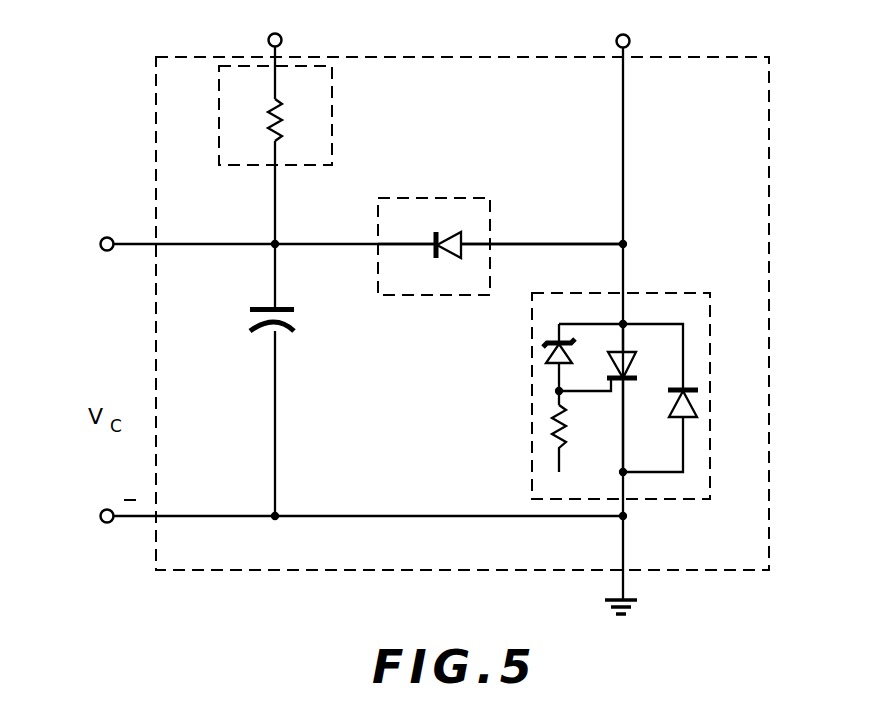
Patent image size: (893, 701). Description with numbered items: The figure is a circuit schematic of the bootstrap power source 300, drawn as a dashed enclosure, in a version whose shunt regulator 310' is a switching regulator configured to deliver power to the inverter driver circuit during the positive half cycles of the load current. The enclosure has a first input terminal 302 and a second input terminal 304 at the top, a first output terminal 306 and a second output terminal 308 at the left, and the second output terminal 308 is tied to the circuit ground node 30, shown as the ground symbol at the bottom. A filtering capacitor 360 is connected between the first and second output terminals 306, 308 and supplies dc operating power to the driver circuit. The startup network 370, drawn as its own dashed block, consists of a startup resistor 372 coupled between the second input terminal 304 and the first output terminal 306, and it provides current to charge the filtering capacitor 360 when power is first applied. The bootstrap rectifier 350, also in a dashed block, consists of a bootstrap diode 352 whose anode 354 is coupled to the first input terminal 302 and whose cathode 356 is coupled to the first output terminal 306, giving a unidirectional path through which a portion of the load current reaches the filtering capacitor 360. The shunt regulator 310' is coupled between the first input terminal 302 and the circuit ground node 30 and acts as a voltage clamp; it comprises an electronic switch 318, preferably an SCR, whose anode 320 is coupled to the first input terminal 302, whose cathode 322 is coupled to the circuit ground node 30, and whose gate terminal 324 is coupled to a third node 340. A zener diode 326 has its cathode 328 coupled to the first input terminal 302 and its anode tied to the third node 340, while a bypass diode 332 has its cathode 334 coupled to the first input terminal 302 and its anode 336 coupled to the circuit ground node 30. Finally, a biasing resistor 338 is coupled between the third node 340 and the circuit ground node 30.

The circuit ground node 30 is at (617, 577).
The bootstrap power source 300 is at (400, 57).
The first input terminal 302 is at (630, 38).
The second input terminal 304 is at (283, 36).
The first output terminal 306 is at (100, 240).
The second output terminal 308 is at (102, 510).
The shunt regulator 310' is at (638, 383).
The electronic switch 318 is at (629, 366).
The anode 320 is at (623, 343).
The cathode 322 is at (623, 413).
The gate terminal 324 is at (586, 393).
The zener diode 326 is at (552, 362).
The cathode 328 is at (616, 322).
The bypass diode 332 is at (697, 408).
The cathode 334 is at (683, 350).
The anode 336 is at (683, 458).
The biasing resistor 338 is at (563, 425).
The third node 340 is at (559, 391).
The bootstrap rectifier 350 is at (435, 198).
The bootstrap diode 352 is at (461, 236).
The anode 354 is at (480, 245).
The cathode 356 is at (415, 247).
The filtering capacitor 360 is at (282, 309).
The startup network 370 is at (333, 85).
The startup resistor 372 is at (268, 122).